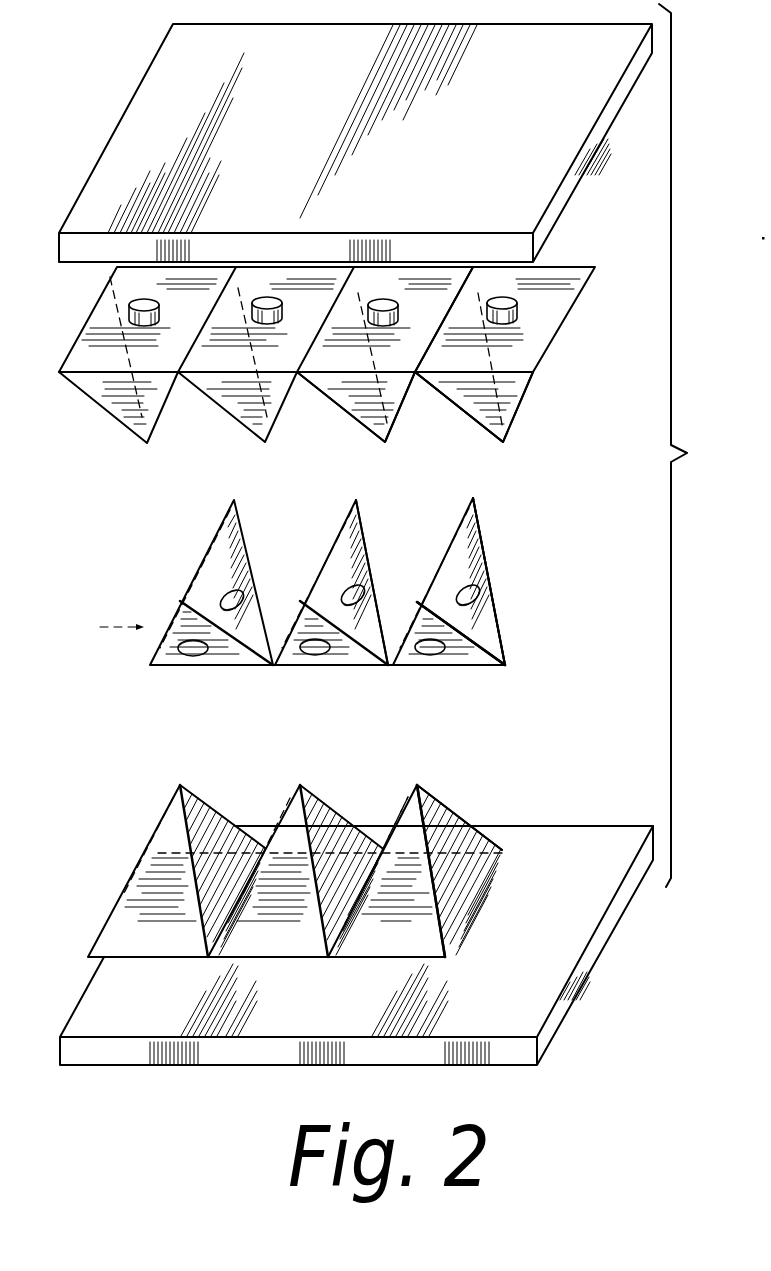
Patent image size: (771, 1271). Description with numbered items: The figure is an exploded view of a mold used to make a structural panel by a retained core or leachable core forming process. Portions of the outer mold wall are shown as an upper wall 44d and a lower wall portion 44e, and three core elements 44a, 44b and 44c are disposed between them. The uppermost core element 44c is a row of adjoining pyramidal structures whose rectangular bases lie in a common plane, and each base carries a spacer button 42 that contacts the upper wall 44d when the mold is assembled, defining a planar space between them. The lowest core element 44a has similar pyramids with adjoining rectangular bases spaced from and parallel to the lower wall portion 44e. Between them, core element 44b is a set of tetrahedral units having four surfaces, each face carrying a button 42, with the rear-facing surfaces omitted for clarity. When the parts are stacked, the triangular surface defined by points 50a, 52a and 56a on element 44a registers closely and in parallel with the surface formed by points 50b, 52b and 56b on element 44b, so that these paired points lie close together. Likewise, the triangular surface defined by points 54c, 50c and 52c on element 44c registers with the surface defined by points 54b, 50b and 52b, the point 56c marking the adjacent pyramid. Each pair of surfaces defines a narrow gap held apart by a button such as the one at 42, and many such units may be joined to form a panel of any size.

The spacer button 42 is at (515, 305).
The core element 44a is at (332, 844).
The core element 44b is at (350, 609).
The core element 44c is at (325, 328).
The upper wall 44d is at (592, 157).
The lower wall portion 44e is at (595, 948).
The point 50a is at (417, 785).
The point 50b is at (417, 602).
The point 50c is at (415, 372).
The point 52a is at (503, 850).
The point 52b is at (505, 665).
The point 52c is at (503, 443).
The point 54b is at (473, 498).
The point 54c is at (473, 267).
The point 56a is at (395, 855).
The point 56b is at (388, 665).
The point 56c is at (385, 443).